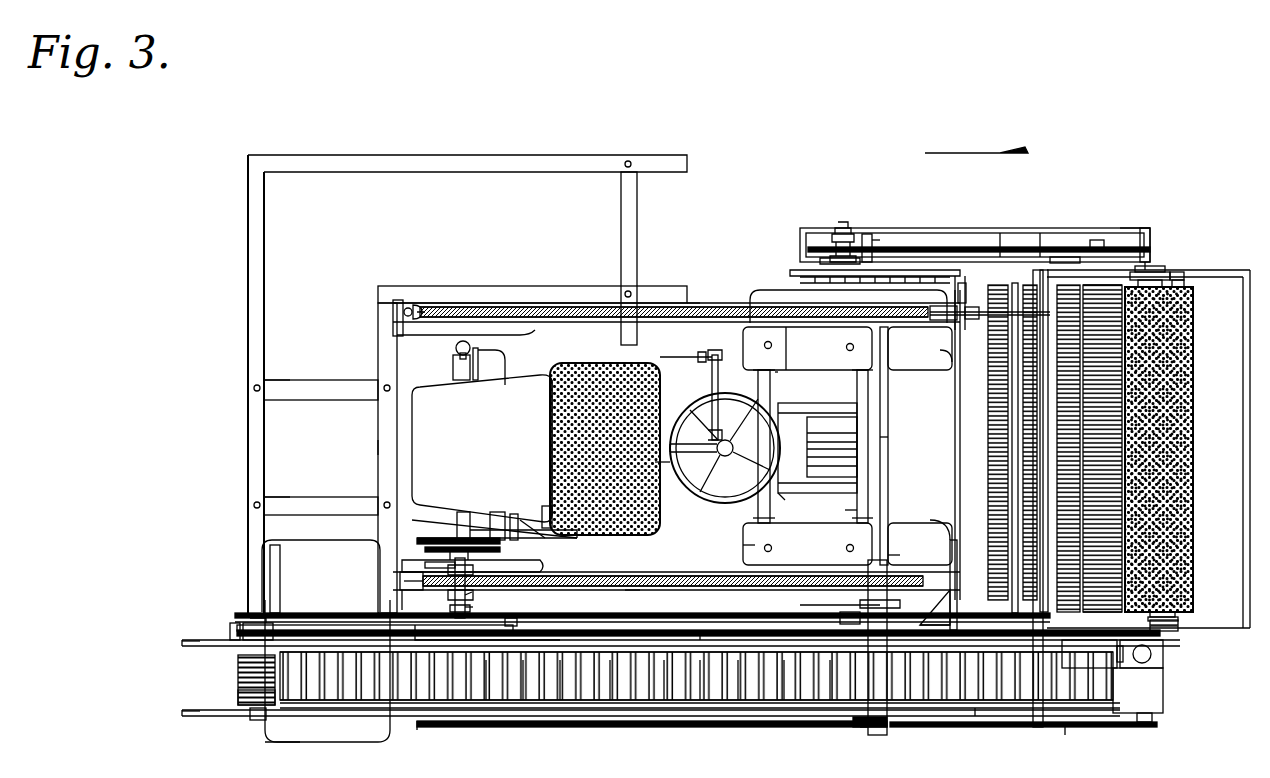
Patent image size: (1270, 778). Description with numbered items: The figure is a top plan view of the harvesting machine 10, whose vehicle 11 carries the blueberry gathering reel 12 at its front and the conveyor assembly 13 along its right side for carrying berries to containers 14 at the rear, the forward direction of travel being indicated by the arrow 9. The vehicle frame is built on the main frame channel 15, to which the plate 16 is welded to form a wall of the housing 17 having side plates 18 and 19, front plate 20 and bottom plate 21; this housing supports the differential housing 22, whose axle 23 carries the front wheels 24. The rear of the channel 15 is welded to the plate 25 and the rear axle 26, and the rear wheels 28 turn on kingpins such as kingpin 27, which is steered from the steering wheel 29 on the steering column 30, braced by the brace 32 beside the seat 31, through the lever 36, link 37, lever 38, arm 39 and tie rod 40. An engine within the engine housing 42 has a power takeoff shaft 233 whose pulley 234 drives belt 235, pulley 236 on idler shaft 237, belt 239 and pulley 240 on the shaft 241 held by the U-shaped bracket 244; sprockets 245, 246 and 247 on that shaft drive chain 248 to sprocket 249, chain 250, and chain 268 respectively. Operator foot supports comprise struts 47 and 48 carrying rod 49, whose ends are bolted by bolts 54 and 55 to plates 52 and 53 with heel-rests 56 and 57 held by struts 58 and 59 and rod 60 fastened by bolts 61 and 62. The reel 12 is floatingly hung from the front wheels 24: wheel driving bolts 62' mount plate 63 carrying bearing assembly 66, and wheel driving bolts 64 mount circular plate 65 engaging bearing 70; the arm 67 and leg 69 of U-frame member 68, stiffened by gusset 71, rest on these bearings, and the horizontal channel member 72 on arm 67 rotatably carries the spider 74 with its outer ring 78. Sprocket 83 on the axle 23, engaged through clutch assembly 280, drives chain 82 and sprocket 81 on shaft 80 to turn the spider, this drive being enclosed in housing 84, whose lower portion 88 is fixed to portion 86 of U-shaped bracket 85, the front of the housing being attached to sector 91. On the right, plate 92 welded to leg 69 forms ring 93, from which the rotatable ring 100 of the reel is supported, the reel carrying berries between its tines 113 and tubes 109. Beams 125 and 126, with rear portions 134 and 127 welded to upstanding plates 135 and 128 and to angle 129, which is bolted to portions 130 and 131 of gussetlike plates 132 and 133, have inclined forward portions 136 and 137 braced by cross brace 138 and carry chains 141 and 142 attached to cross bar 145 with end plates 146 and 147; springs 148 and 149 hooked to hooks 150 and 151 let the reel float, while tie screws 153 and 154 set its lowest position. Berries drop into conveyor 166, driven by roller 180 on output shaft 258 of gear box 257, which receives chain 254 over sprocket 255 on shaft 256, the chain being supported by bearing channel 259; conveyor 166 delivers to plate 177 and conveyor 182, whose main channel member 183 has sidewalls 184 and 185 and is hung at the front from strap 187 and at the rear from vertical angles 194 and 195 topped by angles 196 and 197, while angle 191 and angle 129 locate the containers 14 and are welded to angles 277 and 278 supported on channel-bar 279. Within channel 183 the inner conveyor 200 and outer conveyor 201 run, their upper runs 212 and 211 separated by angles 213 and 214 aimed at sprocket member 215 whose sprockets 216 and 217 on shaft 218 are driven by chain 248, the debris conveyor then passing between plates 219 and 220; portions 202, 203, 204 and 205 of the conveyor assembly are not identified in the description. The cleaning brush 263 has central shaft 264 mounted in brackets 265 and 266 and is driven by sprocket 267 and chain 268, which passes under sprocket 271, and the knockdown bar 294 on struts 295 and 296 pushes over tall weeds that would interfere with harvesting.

The harvesting machine 10 is at (786, 146).
The arrow 9 is at (976, 138).
The angle 277 is at (500, 172).
The channel-bar 279 is at (637, 204).
The angle 278 is at (505, 286).
The angle 191 is at (252, 440).
The angle 129 is at (378, 418).
The horizontal portion 131 is at (305, 395).
The horizontal portion 130 is at (300, 497).
The gussetlike plate 133 is at (278, 378).
The gussetlike plate 132 is at (278, 500).
The vehicle 11 is at (370, 447).
The elongated spring 148 is at (558, 307).
The upstanding plate 135 is at (393, 312).
The hook 150 is at (408, 308).
The rear portion 134 is at (418, 305).
The beam 125 is at (696, 303).
The rear wheels 28 is at (397, 337).
The kingpin 27 is at (456, 344).
The lever 38 is at (460, 360).
The rear axle 26 is at (460, 380).
The tie rod 40 is at (478, 380).
The arm 39 is at (506, 372).
The link 37 is at (598, 360).
The engine housing 42 is at (412, 455).
The vehicle seat 31 is at (552, 436).
The steering wheel 29 is at (655, 445).
The brace 32 is at (655, 462).
The steering column 30 is at (722, 456).
The main frame channel 15 is at (735, 478).
The lever 36 is at (720, 368).
The front wheels 24 is at (750, 300).
The heel-rest 57 is at (745, 334).
The bolt 62 is at (789, 348).
The bolt 55 is at (860, 347).
The plate 53 is at (892, 337).
The upwardly inclined forward portion 136 is at (952, 357).
The strut 58 is at (790, 560).
The heel-rest 56 is at (743, 553).
The bolt 61 is at (772, 550).
The bolt 54 is at (884, 540).
The plate 52 is at (882, 560).
The sprocket 271 is at (860, 558).
The plate 92 is at (948, 600).
The plate 16 is at (770, 392).
The strut 59 is at (771, 372).
The housing 17 is at (801, 362).
The rod 60 is at (756, 517).
The side plate 18 is at (828, 403).
The differential housing 22 is at (807, 428).
The bottom plate 21 is at (800, 466).
The rod 49 is at (868, 465).
The strut 48 is at (870, 381).
The strut 47 is at (870, 516).
The side plate 19 is at (795, 502).
The axle 23 is at (845, 510).
The front plate 20 is at (888, 422).
The angle cross brace 138 is at (888, 435).
The blueberry gathering reel 12 is at (953, 452).
The chain 142 is at (935, 517).
The plate 25 is at (450, 515).
The idler shaft 237 is at (462, 512).
The pulley 236 is at (498, 512).
The belt 235 is at (520, 518).
The belt 239 is at (535, 525).
The power takeoff shaft 233 is at (552, 512).
The pulley 234 is at (570, 540).
The pulley 240 is at (422, 538).
The elongated spring 149 is at (670, 558).
The rear horizontal portion 127 is at (632, 590).
The beam 126 is at (666, 588).
The upstanding plate 128 is at (400, 575).
The hook 151 is at (400, 582).
The chain 248 is at (380, 612).
The shaft 241 is at (473, 570).
The chain 250 is at (445, 590).
The U-shaped bracket 244 is at (474, 596).
The sprocket 245 is at (475, 610).
The sprocket 246 is at (518, 622).
The sprocket 249 is at (238, 613).
The chain 268 is at (605, 630).
The sprocket 247 is at (375, 640).
The vertical angle 195 is at (410, 632).
The sidewall 184 is at (205, 646).
The plate 220 is at (190, 640).
The sidewall 185 is at (197, 716).
The plate 219 is at (200, 716).
The conveyor assembly 13 is at (604, 735).
The chain 254 is at (450, 727).
The sprocket 255 is at (1157, 727).
The shaft 256 is at (1152, 716).
The conveyor 182 is at (1068, 727).
The main channel member 183 is at (985, 716).
The plate 147 is at (1036, 727).
The strap 187 is at (880, 735).
The bearing channel 259 is at (895, 727).
The containers 14 is at (262, 548).
The angle 197 is at (284, 600).
The angle 214 is at (290, 632).
The sprocket 217 is at (240, 642).
The sprocket member 215 is at (238, 676).
The sprocket 216 is at (240, 698).
The shaft 218 is at (254, 722).
The angle 196 is at (322, 742).
The angle 213 is at (290, 742).
The vertical angle 194 is at (414, 727).
The slat 203 is at (484, 716).
The slat 204 is at (522, 716).
The upper run 212 is at (566, 716).
The slat 205 is at (626, 716).
The slat 202 is at (705, 716).
The conveyor 200 is at (740, 716).
The conveyor 201 is at (784, 716).
The upper run 211 is at (832, 716).
The plate 177 is at (708, 630).
The circular plate 65 is at (800, 606).
The wheel driving bolts 64 is at (840, 618).
The leg 69 is at (952, 600).
The bearing 70 is at (950, 618).
The conveyor 166 is at (1089, 654).
The gear box 257 is at (1160, 655).
The output shaft 258 is at (1122, 665).
The roller 180 is at (1115, 680).
The bracket 266 is at (1178, 624).
The sprocket 267 is at (1178, 632).
The rotatable ring 100 is at (1175, 614).
The ring 93 is at (1178, 620).
The strut 295 is at (1240, 628).
The knockdown bar 294 is at (1243, 420).
The strut 296 is at (1236, 275).
The cleaning brush 263 is at (1195, 465).
The rectangular tubular members 109 is at (988, 405).
The cross bar 145 is at (1023, 418).
The tie screw 153 is at (1012, 390).
The tie screw 154 is at (1040, 498).
The tines 113 is at (990, 470).
The upwardly inclined forward portion 137 is at (1040, 520).
The chain 141 is at (988, 300).
The U-frame member 68 is at (968, 276).
The gusset 71 is at (945, 283).
The sprocket 83 is at (805, 234).
The arm 67 is at (920, 247).
The clutch assembly 280 is at (846, 222).
The lower horizontal portion 86 is at (870, 234).
The U-shaped bracket 85 is at (880, 240).
The bearing assembly 66 is at (820, 260).
The wheel driving bolts 62' is at (863, 273).
The plate 63 is at (800, 278).
The horizontal channel member 72 is at (1000, 257).
The chain 82 is at (1040, 257).
The plate 146 is at (1065, 257).
The shaft 80 is at (1097, 240).
The lower horizontal portion 88 is at (1124, 228).
The housing 84 is at (1145, 228).
The sprocket 81 is at (1145, 262).
The sector 91 is at (1150, 266).
The central shaft 264 is at (1160, 272).
The bracket 265 is at (1162, 280).
The spider 74 is at (1184, 276).
The outer ring 78 is at (1184, 284).